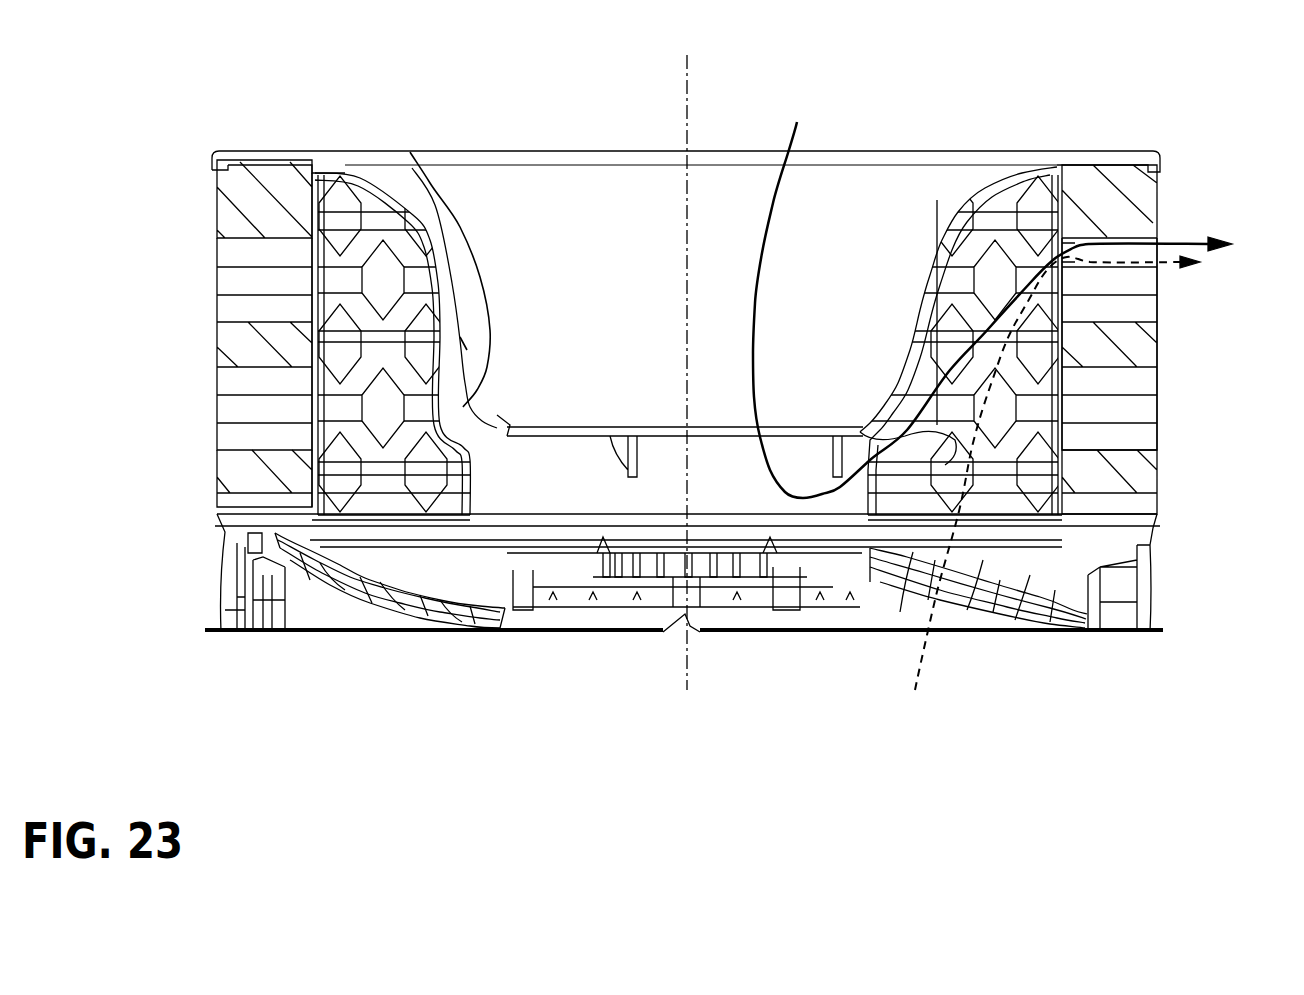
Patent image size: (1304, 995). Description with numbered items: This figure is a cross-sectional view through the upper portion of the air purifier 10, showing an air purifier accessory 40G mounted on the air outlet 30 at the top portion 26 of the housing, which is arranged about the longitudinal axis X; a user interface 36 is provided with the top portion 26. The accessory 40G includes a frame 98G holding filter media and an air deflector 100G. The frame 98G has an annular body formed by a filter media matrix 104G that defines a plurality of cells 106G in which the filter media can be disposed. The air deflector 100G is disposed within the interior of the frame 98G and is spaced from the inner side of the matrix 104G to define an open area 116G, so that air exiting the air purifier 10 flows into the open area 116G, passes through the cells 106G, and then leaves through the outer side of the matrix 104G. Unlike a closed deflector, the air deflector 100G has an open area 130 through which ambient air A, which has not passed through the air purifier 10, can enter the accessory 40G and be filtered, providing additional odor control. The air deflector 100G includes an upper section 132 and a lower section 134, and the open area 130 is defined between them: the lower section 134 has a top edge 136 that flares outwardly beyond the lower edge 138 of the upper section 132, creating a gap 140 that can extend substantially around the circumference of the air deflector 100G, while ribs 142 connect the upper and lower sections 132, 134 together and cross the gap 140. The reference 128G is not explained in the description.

The air purifier 10 is at (216, 584).
The top portion 26 is at (1150, 578).
The air outlet 30 is at (1030, 590).
The user interface 36 is at (640, 550).
The air purifier accessory 40G is at (212, 149).
The frame 98G is at (217, 212).
The air deflector 100G is at (607, 151).
The filter media matrix 104G is at (217, 470).
The cells 106G is at (217, 283).
The open area 116G is at (1025, 412).
The lattice structure 128G is at (1027, 190).
The open area 130 is at (410, 152).
The upper section 132 is at (385, 235).
The lower section 134 is at (465, 490).
The top edge 136 is at (910, 650).
The lower edge 138 is at (868, 432).
The gap 140 is at (912, 420).
The ribs 142 is at (628, 470).
The ambient air A is at (992, 296).
The longitudinal axis X is at (687, 361).